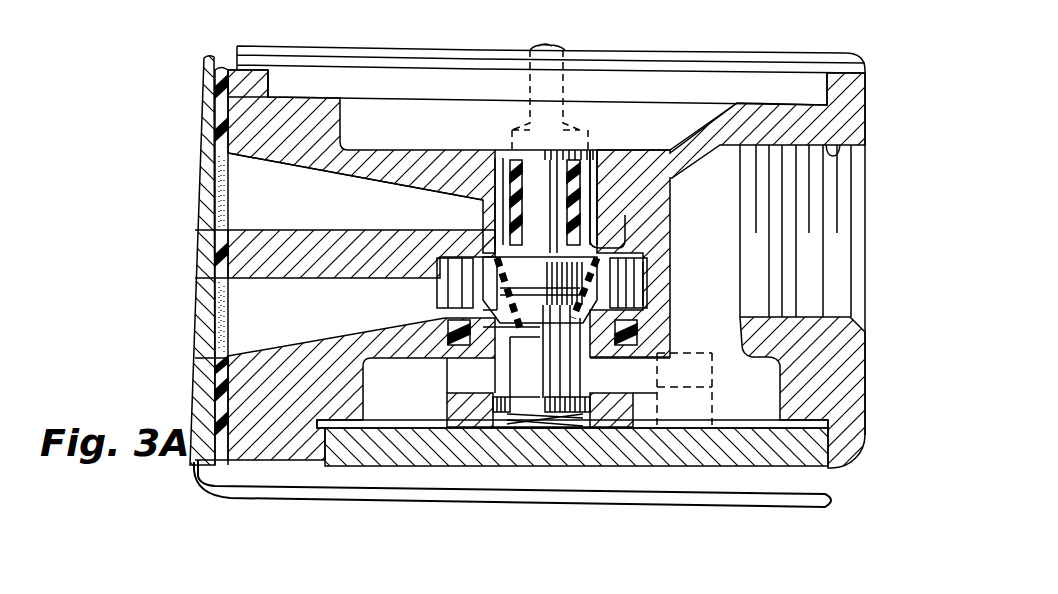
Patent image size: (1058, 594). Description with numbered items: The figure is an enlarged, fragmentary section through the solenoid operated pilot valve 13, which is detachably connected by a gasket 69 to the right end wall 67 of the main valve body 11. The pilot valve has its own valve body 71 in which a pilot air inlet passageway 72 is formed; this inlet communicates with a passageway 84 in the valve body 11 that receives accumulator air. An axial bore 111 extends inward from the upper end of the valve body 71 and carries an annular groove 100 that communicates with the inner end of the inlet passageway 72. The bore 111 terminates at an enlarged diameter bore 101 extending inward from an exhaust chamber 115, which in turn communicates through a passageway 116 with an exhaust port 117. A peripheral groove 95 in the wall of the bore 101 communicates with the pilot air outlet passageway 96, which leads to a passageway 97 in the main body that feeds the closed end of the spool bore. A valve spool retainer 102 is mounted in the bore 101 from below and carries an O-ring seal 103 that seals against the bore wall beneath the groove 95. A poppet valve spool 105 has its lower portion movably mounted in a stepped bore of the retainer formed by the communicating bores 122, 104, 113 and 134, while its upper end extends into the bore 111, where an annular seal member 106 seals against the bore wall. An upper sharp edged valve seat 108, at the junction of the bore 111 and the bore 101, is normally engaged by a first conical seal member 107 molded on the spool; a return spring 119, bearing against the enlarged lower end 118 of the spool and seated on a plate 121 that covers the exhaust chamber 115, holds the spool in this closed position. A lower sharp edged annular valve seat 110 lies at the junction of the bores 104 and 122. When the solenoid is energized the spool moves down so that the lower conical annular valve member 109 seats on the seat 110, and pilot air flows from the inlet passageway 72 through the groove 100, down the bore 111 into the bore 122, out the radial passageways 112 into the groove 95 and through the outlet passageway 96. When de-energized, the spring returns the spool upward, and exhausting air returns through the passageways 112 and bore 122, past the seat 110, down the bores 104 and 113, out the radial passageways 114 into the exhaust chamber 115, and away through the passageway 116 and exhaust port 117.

The valve body 11 is at (133, 5).
The solenoid operated pilot valve 13 is at (852, 82).
The right end wall 67 is at (203, 262).
The gasket 69 is at (222, 101).
The valve body 71 is at (250, 72).
The pilot air inlet passageway 72 is at (280, 163).
The passageway 84 is at (203, 229).
The peripheral groove 95 is at (740, 290).
The pilot air cylinder or outlet passageway 96 is at (228, 347).
The passageway 97 is at (226, 358).
The annular groove 100 is at (597, 220).
The enlarged diameter bore 101 is at (620, 356).
The valve spool retainer 102 is at (606, 400).
The O-ring seal 103 is at (650, 335).
The bore 104 is at (562, 378).
The poppet valve spool 105 is at (535, 176).
The annular seal member 106 is at (583, 165).
The first conical seal member 107 is at (574, 248).
The upper sharp edged valve seat 108 is at (512, 250).
The lower conical annular valve member 109 is at (498, 300).
The lower sharp edged annular valve seat 110 is at (570, 318).
The axial bore 111 is at (612, 244).
The radial passageways 112 is at (450, 285).
The bore 113 is at (490, 405).
The radial passageways 114 is at (478, 392).
The exhaust chamber 115 is at (762, 385).
The passageway 116 is at (728, 292).
The exhaust port 117 is at (838, 152).
The enlarged lower end 118 is at (501, 413).
The return spring 119 is at (548, 424).
The plate 121 is at (822, 468).
The bore 122 is at (648, 300).
The bore 134 is at (585, 412).